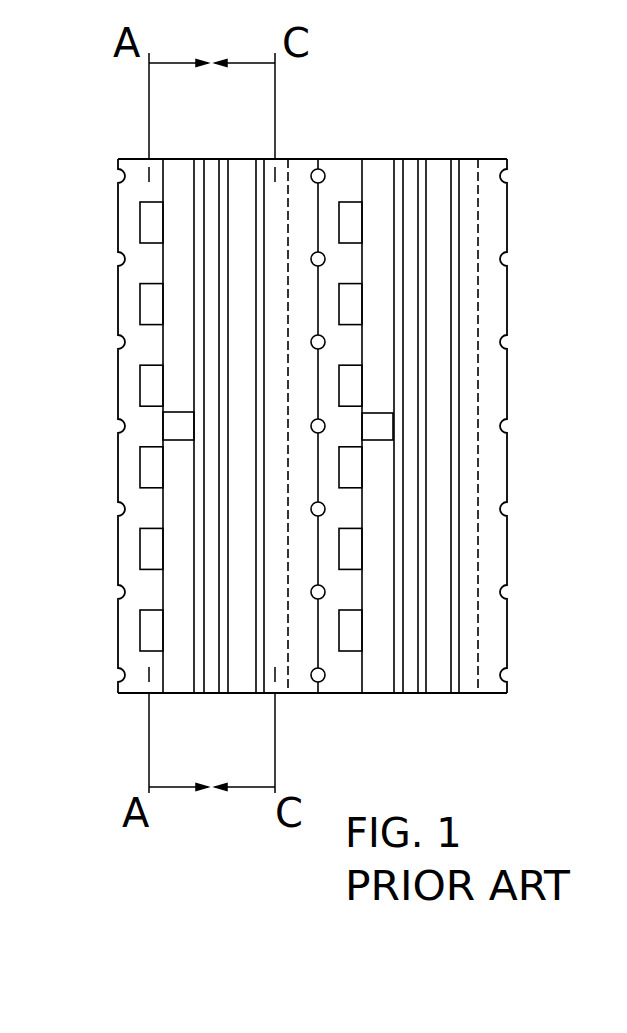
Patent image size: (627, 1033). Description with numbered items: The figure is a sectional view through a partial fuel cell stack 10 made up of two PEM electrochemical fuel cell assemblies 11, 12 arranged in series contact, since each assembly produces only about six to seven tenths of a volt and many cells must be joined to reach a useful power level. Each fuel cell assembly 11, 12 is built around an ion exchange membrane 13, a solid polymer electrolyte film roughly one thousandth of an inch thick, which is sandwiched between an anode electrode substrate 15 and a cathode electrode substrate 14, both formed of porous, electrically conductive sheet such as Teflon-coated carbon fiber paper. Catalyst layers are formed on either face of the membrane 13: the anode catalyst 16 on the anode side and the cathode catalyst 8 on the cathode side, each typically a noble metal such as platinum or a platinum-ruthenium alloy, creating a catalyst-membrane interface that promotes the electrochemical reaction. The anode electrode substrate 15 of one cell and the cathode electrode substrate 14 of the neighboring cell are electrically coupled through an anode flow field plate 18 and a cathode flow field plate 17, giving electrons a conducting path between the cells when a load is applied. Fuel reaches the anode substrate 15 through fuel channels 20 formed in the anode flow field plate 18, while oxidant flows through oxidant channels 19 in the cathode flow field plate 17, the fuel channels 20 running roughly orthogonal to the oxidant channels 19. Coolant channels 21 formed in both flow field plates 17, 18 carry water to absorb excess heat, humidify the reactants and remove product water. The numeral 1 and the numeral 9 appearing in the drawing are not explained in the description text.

The center line 1 is at (297, 167).
The cathode catalyst 8 is at (222, 159).
The connection box 9 is at (172, 425).
The fuel cell stack 10 is at (538, 605).
The fuel cell assembly 11 is at (212, 699).
The fuel cell assembly 12 is at (416, 721).
The ion exchange membrane 13 is at (213, 159).
The cathode electrode substrate 14 is at (243, 159).
The anode electrode substrate 15 is at (180, 175).
The anode catalyst 16 is at (198, 159).
The cathode flow field plate 17 is at (490, 159).
The anode flow field plate 18 is at (137, 159).
The oxidant channels 19 is at (275, 316).
The fuel channels 20 is at (157, 225).
The coolant channels 21 is at (501, 262).